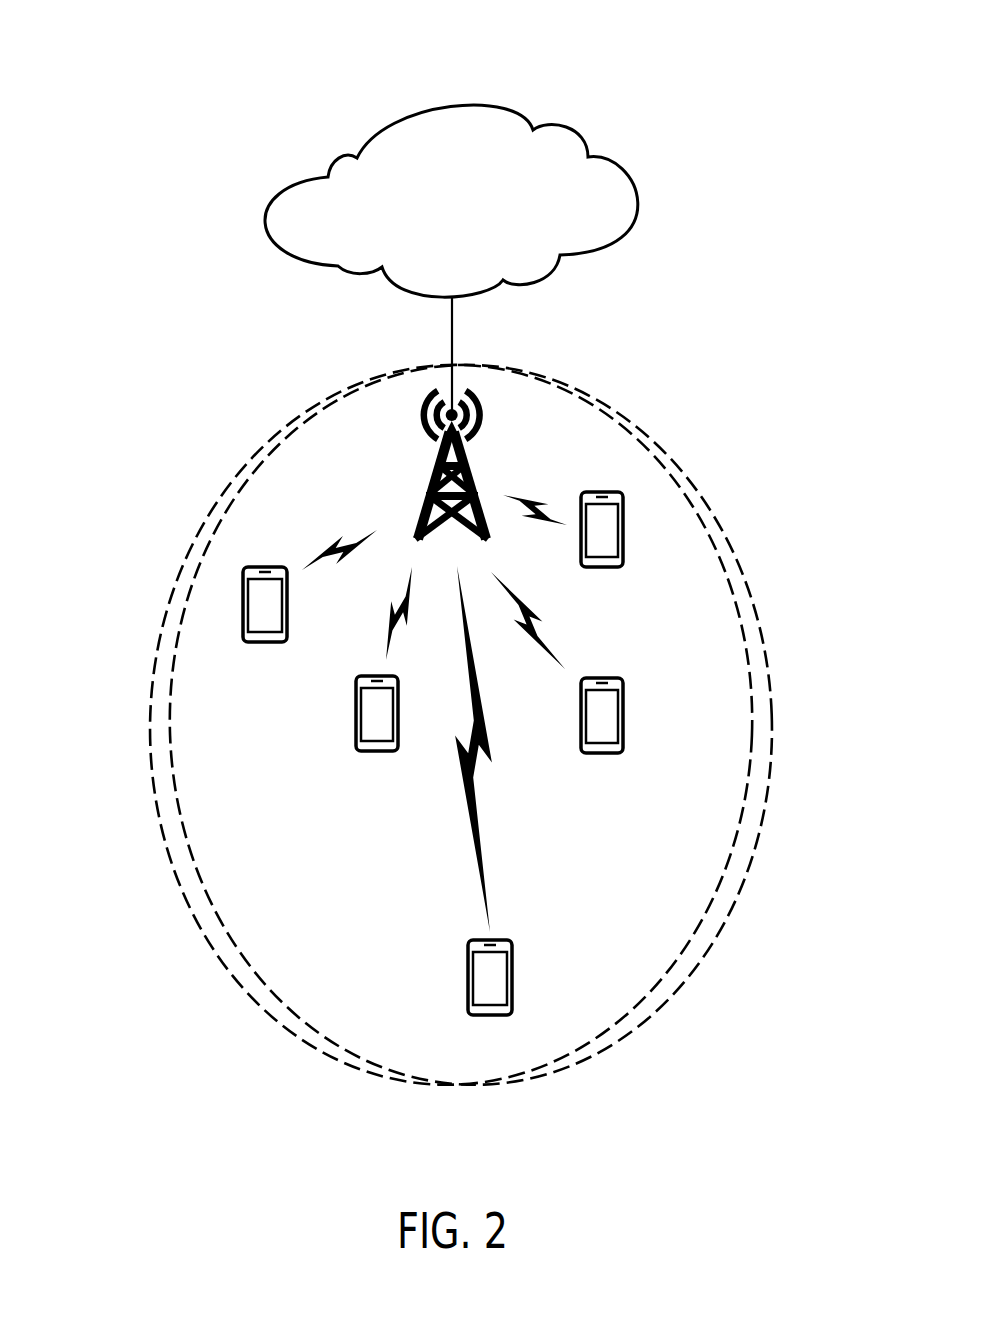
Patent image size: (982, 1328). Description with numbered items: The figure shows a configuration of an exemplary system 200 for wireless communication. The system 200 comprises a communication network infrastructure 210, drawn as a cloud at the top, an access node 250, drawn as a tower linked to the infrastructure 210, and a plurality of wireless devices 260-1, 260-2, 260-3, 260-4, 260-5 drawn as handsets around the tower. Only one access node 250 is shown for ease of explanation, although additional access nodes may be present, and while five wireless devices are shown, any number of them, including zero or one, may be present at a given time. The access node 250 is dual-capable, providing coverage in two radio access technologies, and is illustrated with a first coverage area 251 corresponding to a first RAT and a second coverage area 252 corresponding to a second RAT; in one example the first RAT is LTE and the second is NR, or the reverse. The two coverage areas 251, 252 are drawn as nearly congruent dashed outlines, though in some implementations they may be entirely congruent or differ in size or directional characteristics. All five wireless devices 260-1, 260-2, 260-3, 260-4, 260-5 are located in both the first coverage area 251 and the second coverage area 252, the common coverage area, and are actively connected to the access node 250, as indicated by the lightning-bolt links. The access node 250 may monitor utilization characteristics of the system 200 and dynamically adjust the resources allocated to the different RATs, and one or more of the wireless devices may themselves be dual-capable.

The system 200 is at (714, 71).
The communication network infrastructure 210 is at (638, 198).
The access node 250 is at (437, 470).
The first coverage area 251 is at (152, 745).
The second coverage area 252 is at (772, 752).
The wireless device 260-1 is at (265, 642).
The wireless device 260-2 is at (468, 978).
The wireless device 260-3 is at (378, 751).
The wireless device 260-4 is at (623, 752).
The wireless device 260-5 is at (620, 567).